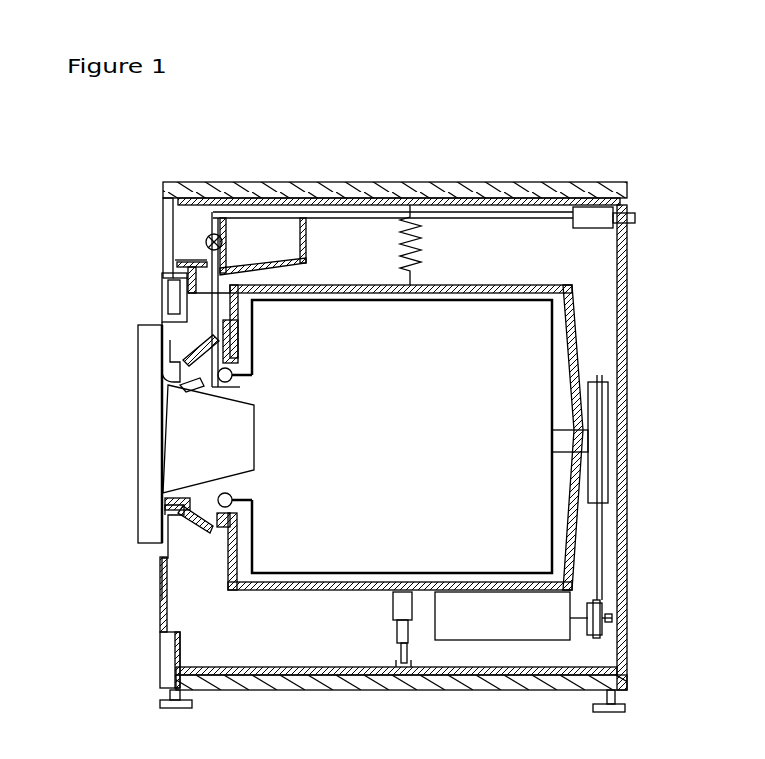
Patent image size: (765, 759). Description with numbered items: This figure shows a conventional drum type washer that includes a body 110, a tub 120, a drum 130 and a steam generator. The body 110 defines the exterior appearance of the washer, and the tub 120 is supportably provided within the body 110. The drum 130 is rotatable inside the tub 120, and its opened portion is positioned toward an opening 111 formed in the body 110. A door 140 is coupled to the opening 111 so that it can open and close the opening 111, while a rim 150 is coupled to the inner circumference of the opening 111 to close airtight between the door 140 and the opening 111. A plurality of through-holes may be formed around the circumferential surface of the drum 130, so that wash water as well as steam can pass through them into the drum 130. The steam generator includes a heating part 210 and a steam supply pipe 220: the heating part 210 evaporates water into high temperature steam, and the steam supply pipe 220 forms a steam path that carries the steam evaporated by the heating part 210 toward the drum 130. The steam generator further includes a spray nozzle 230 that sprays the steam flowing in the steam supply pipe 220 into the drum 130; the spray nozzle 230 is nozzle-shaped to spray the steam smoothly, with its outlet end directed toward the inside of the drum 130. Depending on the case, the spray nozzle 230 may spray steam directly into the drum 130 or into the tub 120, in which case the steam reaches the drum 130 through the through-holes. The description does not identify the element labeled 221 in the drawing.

The body 110 is at (630, 493).
The opening 111 is at (183, 384).
The tub 120 is at (580, 317).
The drum 130 is at (557, 378).
The door 140 is at (137, 457).
The rim 150 is at (190, 362).
The heating part 210 is at (597, 212).
The steam supply pipe 220 is at (416, 227).
The pivot 221 is at (206, 240).
The spray nozzle 230 is at (238, 389).